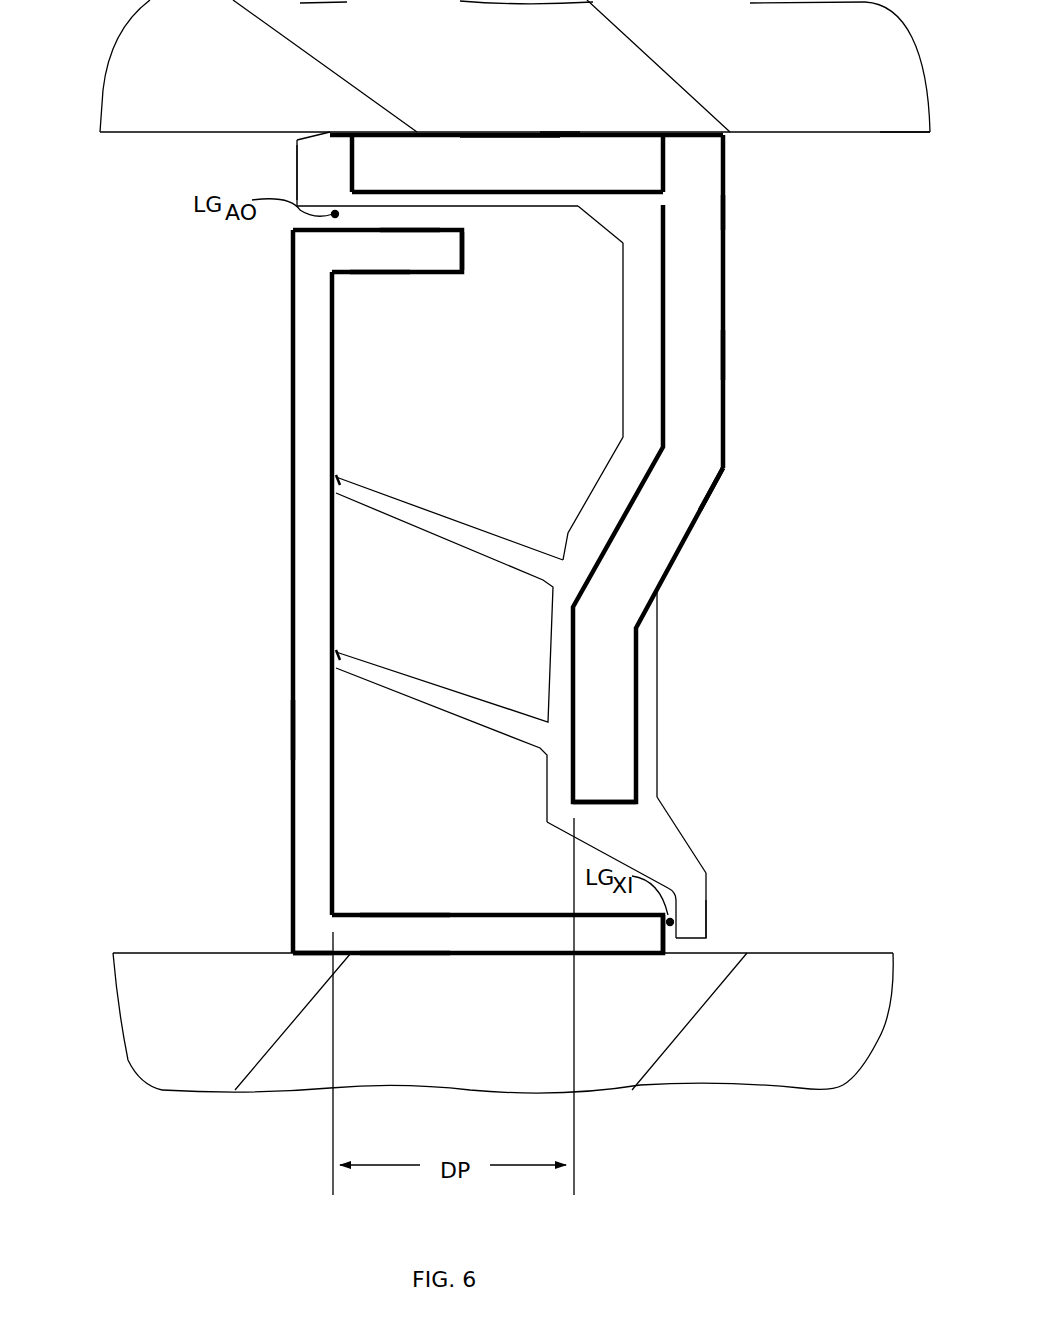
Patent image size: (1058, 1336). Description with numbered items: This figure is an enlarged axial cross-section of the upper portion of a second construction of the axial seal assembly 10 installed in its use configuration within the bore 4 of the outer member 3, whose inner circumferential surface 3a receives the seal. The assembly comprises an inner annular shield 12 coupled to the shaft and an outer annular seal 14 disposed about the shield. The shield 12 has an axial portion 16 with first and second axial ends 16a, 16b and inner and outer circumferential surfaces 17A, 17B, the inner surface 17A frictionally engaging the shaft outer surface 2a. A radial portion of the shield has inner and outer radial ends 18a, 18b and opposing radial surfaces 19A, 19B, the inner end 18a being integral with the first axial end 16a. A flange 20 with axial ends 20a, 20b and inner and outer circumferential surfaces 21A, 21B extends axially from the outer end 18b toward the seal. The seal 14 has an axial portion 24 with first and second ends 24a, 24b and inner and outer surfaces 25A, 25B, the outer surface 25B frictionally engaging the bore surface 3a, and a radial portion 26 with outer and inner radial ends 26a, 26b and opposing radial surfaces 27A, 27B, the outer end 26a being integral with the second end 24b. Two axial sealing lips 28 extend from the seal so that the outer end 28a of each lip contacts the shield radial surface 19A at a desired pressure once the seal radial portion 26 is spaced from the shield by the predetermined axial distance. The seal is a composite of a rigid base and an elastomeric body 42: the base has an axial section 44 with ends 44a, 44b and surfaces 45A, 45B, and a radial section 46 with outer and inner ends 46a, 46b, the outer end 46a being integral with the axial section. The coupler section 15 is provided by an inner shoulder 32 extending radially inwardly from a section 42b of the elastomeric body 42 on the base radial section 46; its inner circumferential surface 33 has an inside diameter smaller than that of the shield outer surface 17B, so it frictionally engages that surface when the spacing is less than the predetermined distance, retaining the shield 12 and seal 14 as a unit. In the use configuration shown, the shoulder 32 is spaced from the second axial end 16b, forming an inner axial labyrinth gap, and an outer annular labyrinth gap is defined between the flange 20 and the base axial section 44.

The outer member 3 is at (118, 70).
The inner circumferential surface 3a is at (893, 136).
The outer surface of the shaft 2a is at (858, 953).
The bore 4 is at (857, 320).
The axial seal assembly 10 is at (165, 443).
The inner annular shield 12 is at (235, 570).
The outer annular seal 14 is at (785, 497).
The coupler section 15 is at (723, 925).
The axial portion of the shield 16 is at (514, 962).
The first axial end of the shield axial portion 16a is at (305, 930).
The second axial end of the shield axial portion 16b is at (655, 955).
The inner circumferential surface of the shield axial portion 17A is at (405, 955).
The outer circumferential surface of the shield axial portion 17B is at (400, 915).
The inner radial end of the shield radial portion 18a is at (305, 892).
The outer radial end of the shield radial portion 18b is at (297, 278).
The radial surface of the shield radial portion 19A is at (334, 745).
The opposing radial surface of the shield radial portion 19B is at (293, 727).
The flange 20 is at (418, 280).
The axial end of the flange 20a is at (293, 241).
The axial end of the flange 20b is at (466, 254).
The inner circumferential surface of the flange 21A is at (375, 272).
The outer circumferential surface of the flange 21B is at (408, 230).
The axial portion of the seal 24 is at (484, 112).
The first axial end of the seal axial portion 24a is at (296, 160).
The second axial end of the seal axial portion 24b is at (728, 165).
The inner circumferential surface of the seal axial portion 25A is at (547, 212).
The outer circumferential surface of the seal axial portion 25B is at (550, 132).
The radial portion of the seal 26 is at (743, 408).
The outer radial end of the seal radial portion 26a is at (728, 210).
The inner radial end of the seal radial portion 26b is at (717, 870).
The radial surface of the seal radial portion 27A is at (620, 378).
The opposing radial surface of the seal radial portion 27B is at (727, 352).
The axial sealing lip 28 is at (458, 527).
The outer end of the axial sealing lip 28a is at (343, 478).
The inner shoulder 32 is at (703, 908).
The inner circumferential surface of the inner shoulder 33 is at (698, 942).
The elastomeric body 42 is at (665, 703).
The section of the elastomeric body 42b is at (680, 860).
The axial section of the rigid base 44 is at (601, 134).
The first axial end of the base axial section 44a is at (371, 148).
The second axial end of the base axial section 44b is at (702, 150).
The inner circumferential surface of the base axial section 45A is at (515, 192).
The outer circumferential surface of the base axial section 45B is at (450, 132).
The radial section of the rigid base 46 is at (693, 515).
The outer radial end of the base radial section 46a is at (698, 217).
The inner radial end of the base radial section 46b is at (620, 782).